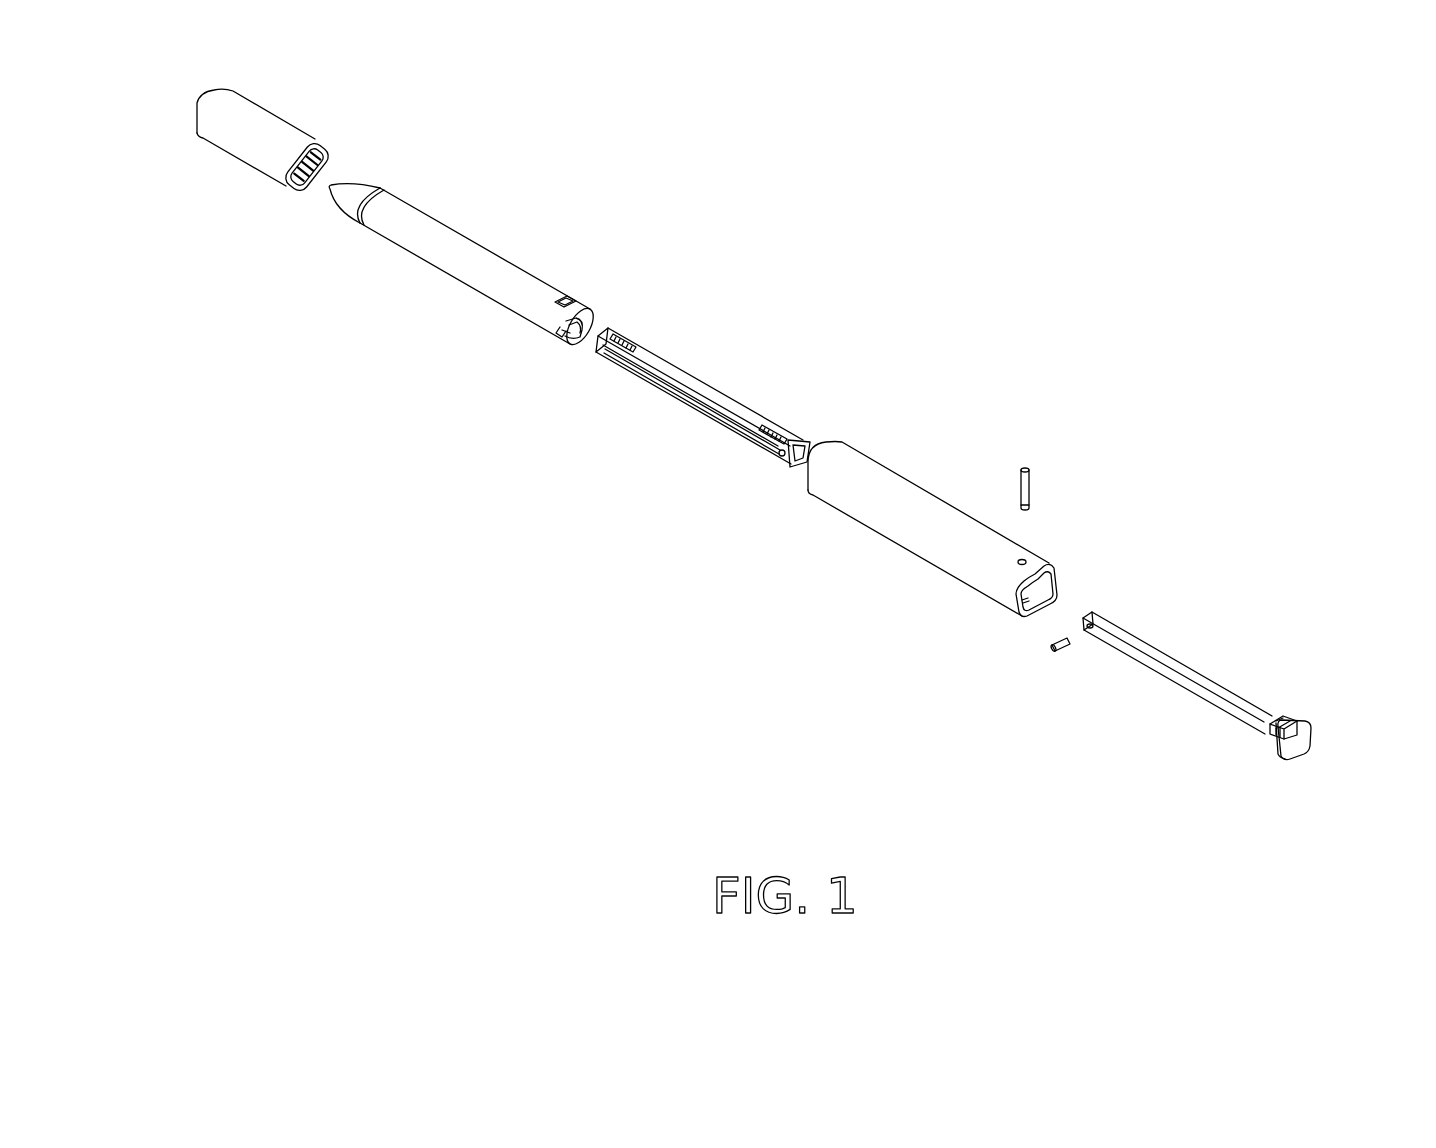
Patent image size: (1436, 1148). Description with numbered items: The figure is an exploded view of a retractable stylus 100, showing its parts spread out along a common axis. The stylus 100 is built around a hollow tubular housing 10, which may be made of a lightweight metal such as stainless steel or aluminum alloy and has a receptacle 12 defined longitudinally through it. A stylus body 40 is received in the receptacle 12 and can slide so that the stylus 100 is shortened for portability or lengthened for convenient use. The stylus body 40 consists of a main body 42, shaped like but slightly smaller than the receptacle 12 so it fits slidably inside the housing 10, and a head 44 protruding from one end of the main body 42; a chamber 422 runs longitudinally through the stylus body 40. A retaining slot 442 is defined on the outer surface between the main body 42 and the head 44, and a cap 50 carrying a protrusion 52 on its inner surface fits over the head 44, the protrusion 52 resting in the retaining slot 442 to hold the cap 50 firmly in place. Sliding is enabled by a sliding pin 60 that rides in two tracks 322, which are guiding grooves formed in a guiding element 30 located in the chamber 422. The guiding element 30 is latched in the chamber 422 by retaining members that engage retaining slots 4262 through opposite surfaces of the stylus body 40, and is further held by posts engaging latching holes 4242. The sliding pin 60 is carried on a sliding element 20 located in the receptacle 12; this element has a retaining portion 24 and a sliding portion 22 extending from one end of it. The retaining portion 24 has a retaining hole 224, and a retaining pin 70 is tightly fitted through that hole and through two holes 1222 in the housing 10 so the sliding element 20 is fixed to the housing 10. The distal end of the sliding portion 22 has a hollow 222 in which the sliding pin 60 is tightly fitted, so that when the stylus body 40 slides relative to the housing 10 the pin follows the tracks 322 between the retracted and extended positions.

The stylus 100 is at (919, 213).
The housing 10 is at (878, 453).
The receptacle 12 is at (1038, 580).
The holes 1222 is at (1025, 559).
The sliding element 20 is at (1287, 820).
The sliding portion 22 is at (1242, 715).
The hollow 222 is at (1090, 631).
The retaining hole 224 is at (1287, 716).
The retaining portion 24 is at (1292, 747).
The guiding element 30 is at (708, 355).
The tracks 322 is at (693, 403).
The stylus body 40 is at (419, 134).
The main body 42 is at (435, 232).
The chamber 422 is at (577, 337).
The latching holes 4242 is at (557, 325).
The retaining slots 4262 is at (573, 297).
The head 44 is at (358, 187).
The retaining slot 442 is at (358, 226).
The cap 50 is at (277, 134).
The protrusion 52 is at (302, 193).
The sliding pin 60 is at (1063, 654).
The retaining pin 70 is at (1027, 488).